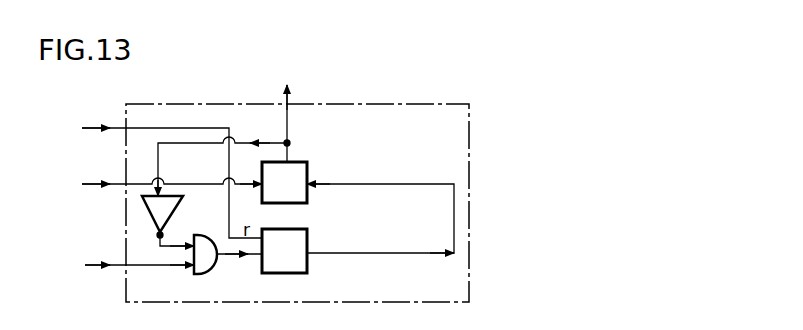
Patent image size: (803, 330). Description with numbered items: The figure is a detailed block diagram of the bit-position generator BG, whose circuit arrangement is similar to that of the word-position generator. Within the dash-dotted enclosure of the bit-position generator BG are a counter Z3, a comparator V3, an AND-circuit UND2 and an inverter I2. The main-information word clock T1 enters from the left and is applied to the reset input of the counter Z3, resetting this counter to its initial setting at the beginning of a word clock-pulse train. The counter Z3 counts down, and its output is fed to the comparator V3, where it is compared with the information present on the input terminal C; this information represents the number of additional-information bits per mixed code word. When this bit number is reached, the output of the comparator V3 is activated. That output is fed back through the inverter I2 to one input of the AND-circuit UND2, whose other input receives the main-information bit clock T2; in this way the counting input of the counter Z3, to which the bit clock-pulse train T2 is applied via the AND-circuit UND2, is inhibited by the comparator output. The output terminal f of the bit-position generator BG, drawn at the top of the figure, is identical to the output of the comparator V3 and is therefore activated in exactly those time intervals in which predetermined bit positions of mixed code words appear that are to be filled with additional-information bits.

The bit-position generator BG is at (470, 136).
The inverter I2 is at (163, 216).
The AND-circuit UND2 is at (198, 275).
The comparator V3 is at (303, 203).
The counter Z3 is at (301, 275).
The main-information word clock T1 is at (156, 177).
The main-information bit clock T2 is at (125, 265).
The input terminal C is at (159, 184).
The output terminal f is at (293, 117).